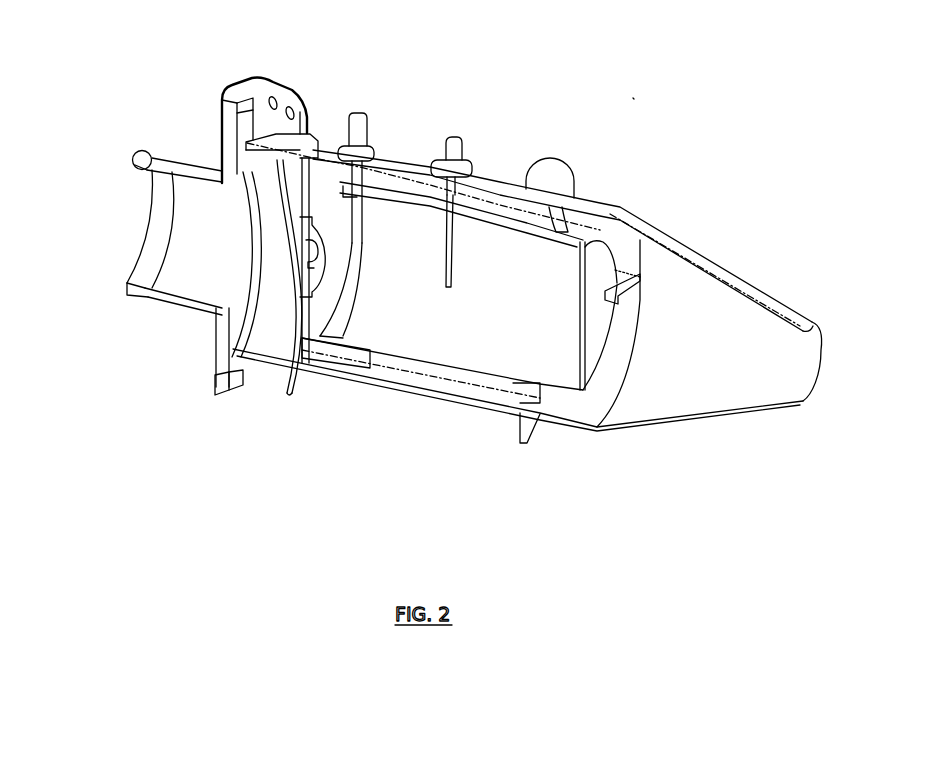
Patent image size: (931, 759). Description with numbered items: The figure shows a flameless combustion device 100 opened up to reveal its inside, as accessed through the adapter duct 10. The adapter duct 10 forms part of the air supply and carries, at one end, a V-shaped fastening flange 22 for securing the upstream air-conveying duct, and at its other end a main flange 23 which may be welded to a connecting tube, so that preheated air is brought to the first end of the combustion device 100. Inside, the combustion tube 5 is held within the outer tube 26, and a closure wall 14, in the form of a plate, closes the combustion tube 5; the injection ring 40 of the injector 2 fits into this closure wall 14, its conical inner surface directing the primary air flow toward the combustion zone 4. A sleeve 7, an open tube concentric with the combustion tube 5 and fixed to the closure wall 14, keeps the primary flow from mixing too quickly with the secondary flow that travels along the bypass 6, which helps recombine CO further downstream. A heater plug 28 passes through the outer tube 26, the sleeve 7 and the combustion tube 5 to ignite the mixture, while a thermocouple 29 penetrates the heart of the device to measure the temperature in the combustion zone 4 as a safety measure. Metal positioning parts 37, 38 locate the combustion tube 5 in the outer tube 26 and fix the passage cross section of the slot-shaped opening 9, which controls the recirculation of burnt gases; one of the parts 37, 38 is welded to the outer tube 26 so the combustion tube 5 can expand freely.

The combustion device 100 is at (633, 98).
The injector 2 is at (268, 358).
The combustion zone 4 is at (530, 305).
The combustion tube 5 is at (452, 323).
The bypass 6 is at (309, 153).
The sleeve 7 is at (412, 147).
The opening 9 is at (332, 187).
The adapter duct 10 is at (183, 307).
The closure wall 14 is at (302, 203).
The fastening flange 22 is at (138, 150).
The main flange 23 is at (215, 104).
The outer tube 26 is at (570, 158).
The heater plug 28 is at (352, 228).
The thermocouple 29 is at (452, 192).
The metal positioning part 37 is at (625, 300).
The metal positioning part 38 is at (343, 355).
The injection ring 40 is at (295, 277).